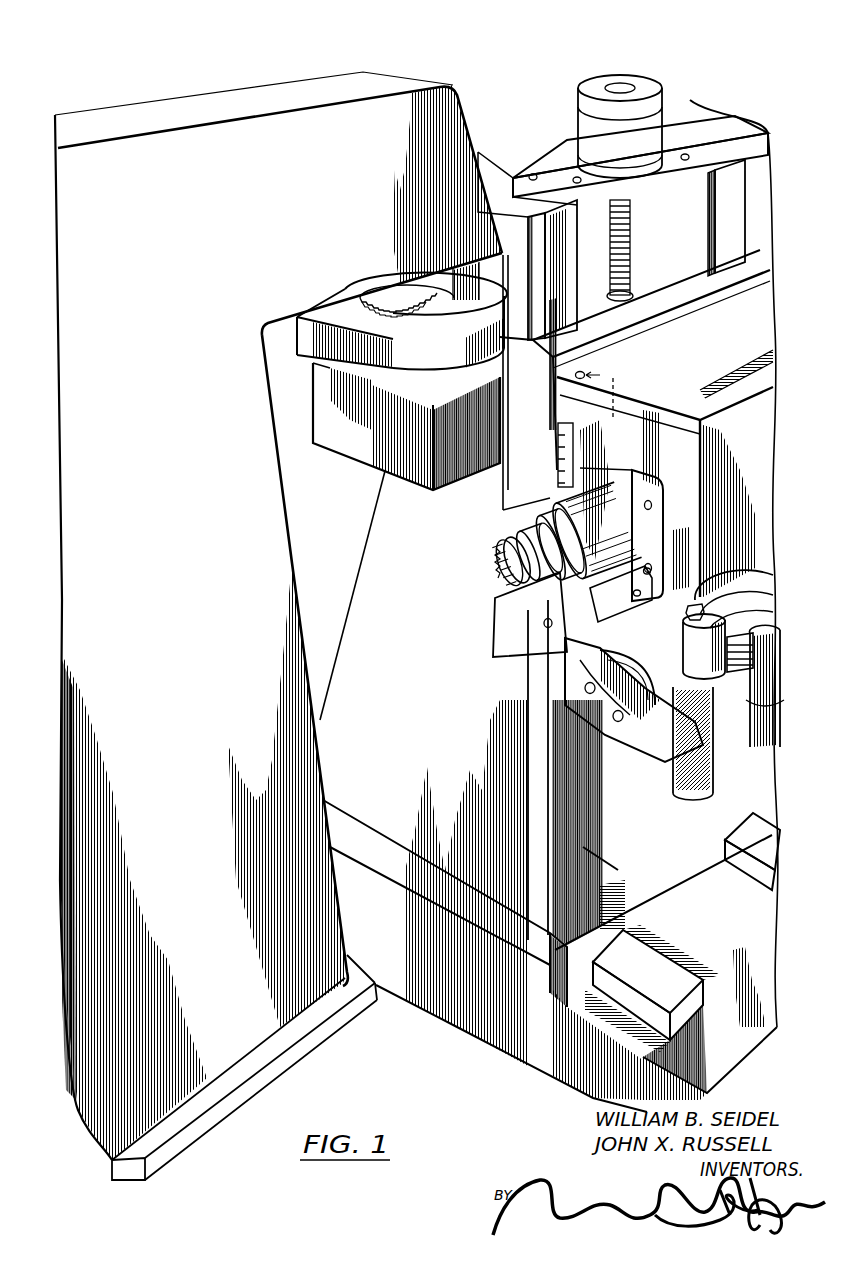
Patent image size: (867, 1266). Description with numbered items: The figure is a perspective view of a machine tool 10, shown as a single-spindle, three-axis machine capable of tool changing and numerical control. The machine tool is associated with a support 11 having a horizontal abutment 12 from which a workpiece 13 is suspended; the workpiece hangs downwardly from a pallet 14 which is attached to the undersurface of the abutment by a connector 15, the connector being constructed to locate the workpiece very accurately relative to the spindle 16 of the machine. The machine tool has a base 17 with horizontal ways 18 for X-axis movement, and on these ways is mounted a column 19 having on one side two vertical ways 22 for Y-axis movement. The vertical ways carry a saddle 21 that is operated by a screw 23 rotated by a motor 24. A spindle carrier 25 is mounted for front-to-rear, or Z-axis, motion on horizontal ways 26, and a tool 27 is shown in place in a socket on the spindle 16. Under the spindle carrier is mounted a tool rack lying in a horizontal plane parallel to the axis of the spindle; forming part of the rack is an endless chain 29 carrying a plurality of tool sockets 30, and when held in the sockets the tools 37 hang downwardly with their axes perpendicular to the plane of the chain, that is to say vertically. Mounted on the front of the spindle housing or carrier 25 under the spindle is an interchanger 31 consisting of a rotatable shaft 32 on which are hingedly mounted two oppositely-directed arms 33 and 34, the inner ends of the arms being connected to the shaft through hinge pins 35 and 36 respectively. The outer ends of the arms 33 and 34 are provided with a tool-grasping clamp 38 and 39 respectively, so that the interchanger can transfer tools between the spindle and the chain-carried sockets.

The machine tool 10 is at (690, 113).
The support 11 is at (277, 562).
The horizontal abutment 12 is at (178, 160).
The workpiece 13 is at (333, 400).
The pallet 14 is at (322, 330).
The connector 15 is at (395, 303).
The spindle 16 is at (587, 490).
The base 17 is at (447, 1030).
The horizontal ways 18 is at (770, 842).
The column 19 is at (498, 170).
The saddle 21 is at (697, 310).
The vertical ways 22 is at (720, 228).
The screw 23 is at (630, 222).
The motor 24 is at (586, 88).
The spindle carrier 25 is at (734, 599).
The horizontal ways 26 is at (567, 453).
The tool 27 is at (507, 560).
The endless chain 29 is at (748, 735).
The tool sockets 30 is at (737, 637).
The interchanger 31 is at (543, 642).
The rotatable shaft 32 is at (622, 653).
The arm 33 is at (583, 661).
The arm 34 is at (550, 770).
The hinge pin 35 is at (582, 679).
The hinge pin 36 is at (624, 718).
The tools 37 is at (752, 748).
The tool-grasping clamp 38 is at (620, 594).
The tool-grasping clamp 39 is at (688, 703).